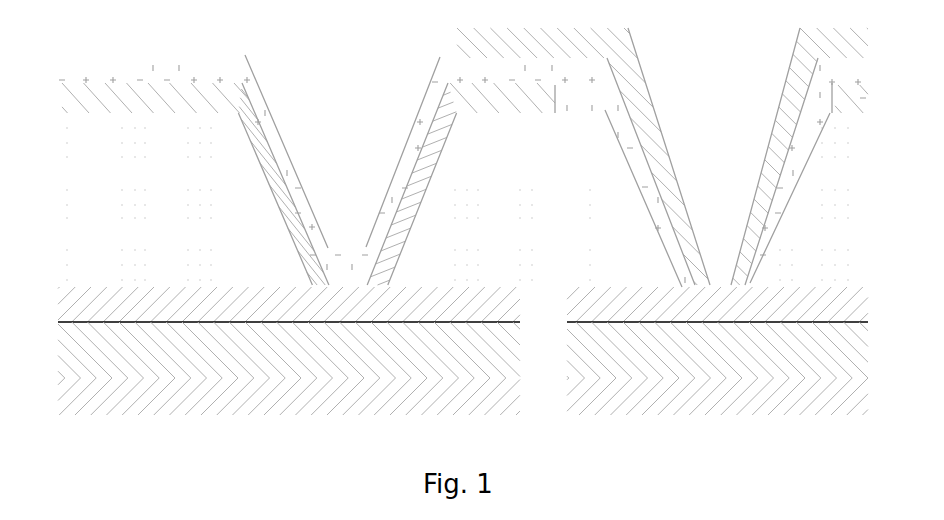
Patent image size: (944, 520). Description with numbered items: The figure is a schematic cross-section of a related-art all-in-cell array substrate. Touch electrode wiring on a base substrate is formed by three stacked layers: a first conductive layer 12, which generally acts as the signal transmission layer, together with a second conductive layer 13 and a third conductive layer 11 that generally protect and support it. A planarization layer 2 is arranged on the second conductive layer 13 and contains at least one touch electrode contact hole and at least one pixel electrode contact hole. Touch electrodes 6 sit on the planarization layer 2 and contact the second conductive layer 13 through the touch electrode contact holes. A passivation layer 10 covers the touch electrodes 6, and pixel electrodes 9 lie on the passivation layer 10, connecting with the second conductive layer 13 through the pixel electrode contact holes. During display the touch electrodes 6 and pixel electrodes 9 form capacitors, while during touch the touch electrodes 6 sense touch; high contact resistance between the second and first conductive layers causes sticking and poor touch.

The planarization layer 2 is at (62, 220).
The touch electrodes 6 is at (62, 101).
The pixel electrodes 9 is at (867, 38).
The passivation layer 10 is at (62, 64).
The third conductive layer 11 is at (68, 387).
The first conductive layer 12 is at (68, 345).
The second conductive layer 13 is at (68, 302).